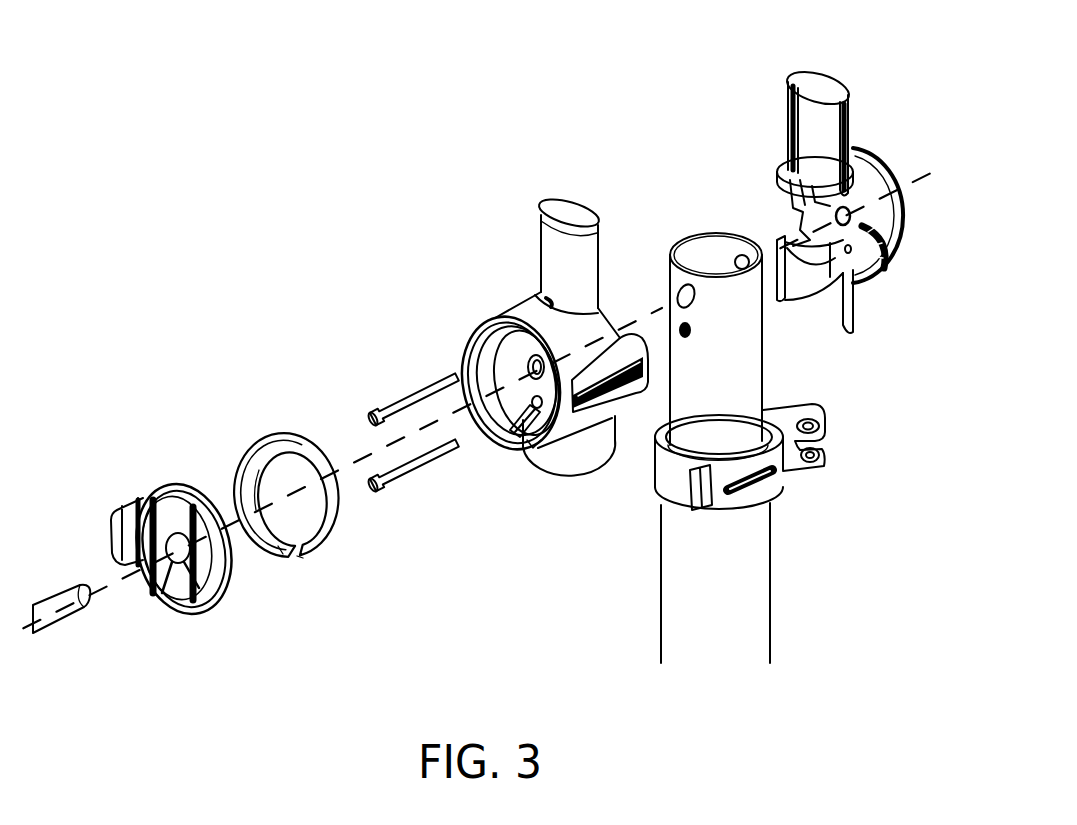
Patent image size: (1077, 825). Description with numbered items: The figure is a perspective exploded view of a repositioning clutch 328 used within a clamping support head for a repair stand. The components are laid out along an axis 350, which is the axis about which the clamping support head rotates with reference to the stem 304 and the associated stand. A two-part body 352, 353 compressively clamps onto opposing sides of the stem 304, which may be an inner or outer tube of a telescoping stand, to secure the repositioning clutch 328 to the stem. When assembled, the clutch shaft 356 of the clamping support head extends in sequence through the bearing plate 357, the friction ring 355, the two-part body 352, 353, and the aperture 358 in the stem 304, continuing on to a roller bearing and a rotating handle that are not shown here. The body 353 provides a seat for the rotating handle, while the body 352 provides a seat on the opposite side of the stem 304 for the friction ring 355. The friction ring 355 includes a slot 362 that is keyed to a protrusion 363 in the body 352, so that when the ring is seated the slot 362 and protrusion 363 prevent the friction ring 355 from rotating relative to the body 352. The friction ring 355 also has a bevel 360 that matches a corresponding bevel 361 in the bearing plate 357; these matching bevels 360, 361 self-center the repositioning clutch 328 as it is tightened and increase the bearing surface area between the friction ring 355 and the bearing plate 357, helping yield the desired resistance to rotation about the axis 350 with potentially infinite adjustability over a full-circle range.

The repositioning clutch 328 is at (360, 160).
The stem 304 is at (697, 236).
The axis 350 is at (413, 431).
The body 352 is at (523, 312).
The body 353 is at (855, 147).
The friction ring 355 is at (332, 542).
The clutch shaft 356 is at (63, 615).
The bearing plate 357 is at (202, 610).
The aperture 358 is at (680, 290).
The bevel 360 is at (254, 462).
The bevel 361 is at (215, 512).
The slot 362 is at (281, 549).
The protrusion 363 is at (518, 438).